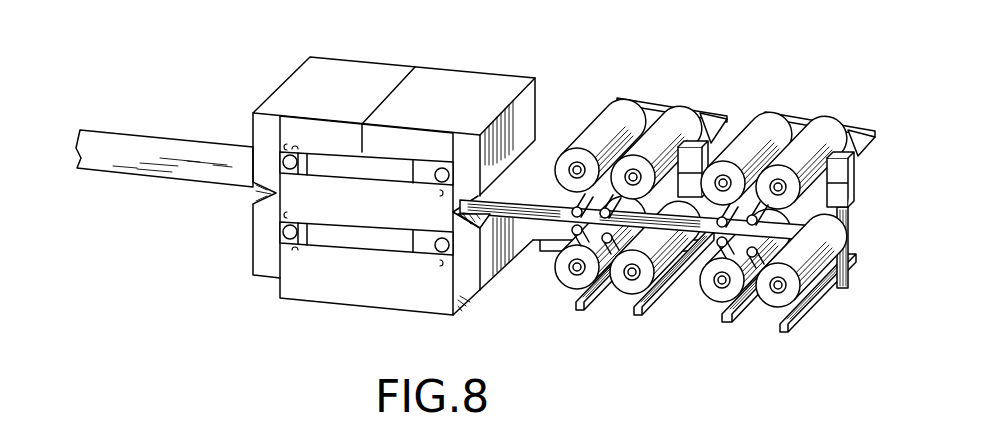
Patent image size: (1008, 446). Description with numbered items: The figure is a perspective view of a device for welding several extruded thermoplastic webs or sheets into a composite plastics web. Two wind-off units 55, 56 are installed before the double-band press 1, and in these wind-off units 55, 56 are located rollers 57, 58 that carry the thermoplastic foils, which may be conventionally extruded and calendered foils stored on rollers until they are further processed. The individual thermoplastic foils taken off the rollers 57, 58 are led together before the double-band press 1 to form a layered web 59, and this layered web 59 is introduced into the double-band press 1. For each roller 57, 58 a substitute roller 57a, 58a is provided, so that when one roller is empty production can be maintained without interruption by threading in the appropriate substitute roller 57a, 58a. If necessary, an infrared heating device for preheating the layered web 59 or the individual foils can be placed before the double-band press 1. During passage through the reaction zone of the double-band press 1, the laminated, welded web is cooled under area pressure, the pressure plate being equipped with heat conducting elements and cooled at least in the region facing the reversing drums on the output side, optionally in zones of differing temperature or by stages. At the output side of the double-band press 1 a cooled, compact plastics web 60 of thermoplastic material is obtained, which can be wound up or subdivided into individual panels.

The double-band press 1 is at (355, 92).
The wind-off unit 55 is at (645, 103).
The wind-off unit 56 is at (797, 122).
The roller 57 is at (670, 136).
The substitute roller 57a is at (577, 153).
The roller 58 is at (832, 150).
The substitute roller 58a is at (725, 167).
The layered web 59 is at (542, 190).
The compact plastics web 60 is at (140, 152).